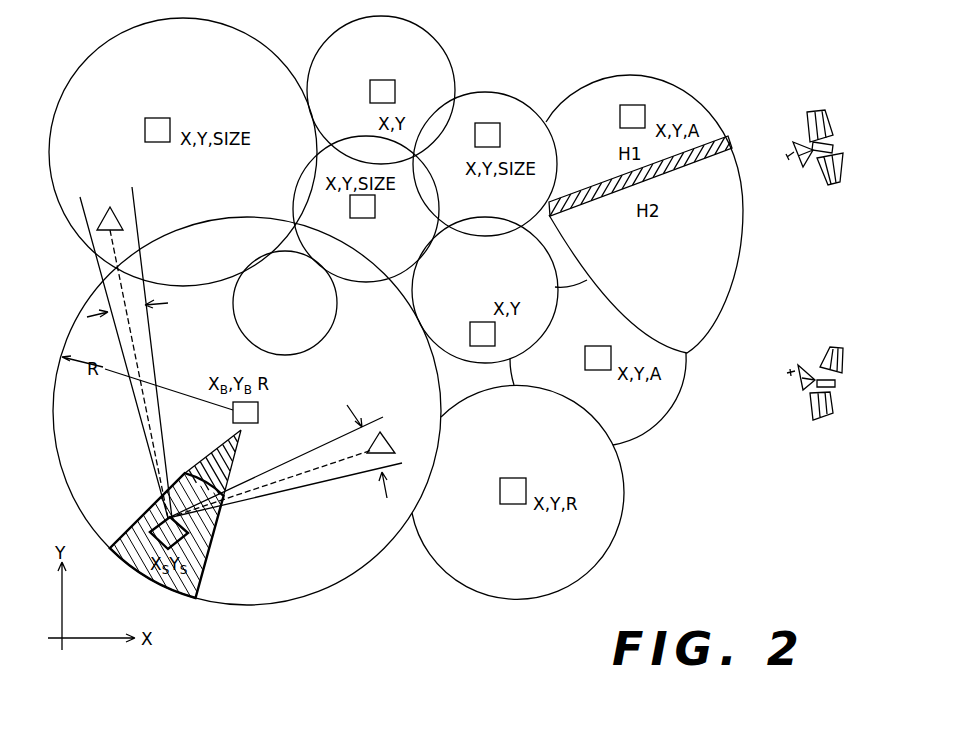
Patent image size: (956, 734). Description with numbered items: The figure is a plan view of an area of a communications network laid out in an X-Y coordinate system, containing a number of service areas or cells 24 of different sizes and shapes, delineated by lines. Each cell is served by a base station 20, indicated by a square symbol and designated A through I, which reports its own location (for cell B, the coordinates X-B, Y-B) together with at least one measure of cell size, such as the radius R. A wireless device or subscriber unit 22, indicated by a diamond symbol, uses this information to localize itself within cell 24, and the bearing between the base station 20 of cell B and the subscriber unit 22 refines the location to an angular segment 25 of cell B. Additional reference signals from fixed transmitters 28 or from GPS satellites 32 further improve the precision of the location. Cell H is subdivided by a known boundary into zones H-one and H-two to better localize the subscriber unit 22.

The base station 20 is at (145, 128).
The wireless device 22 is at (207, 537).
The service area 24 is at (443, 42).
The angular segment 25 is at (152, 498).
The fixed transmitter 28 is at (387, 437).
The GPS satellite 32 is at (813, 110).